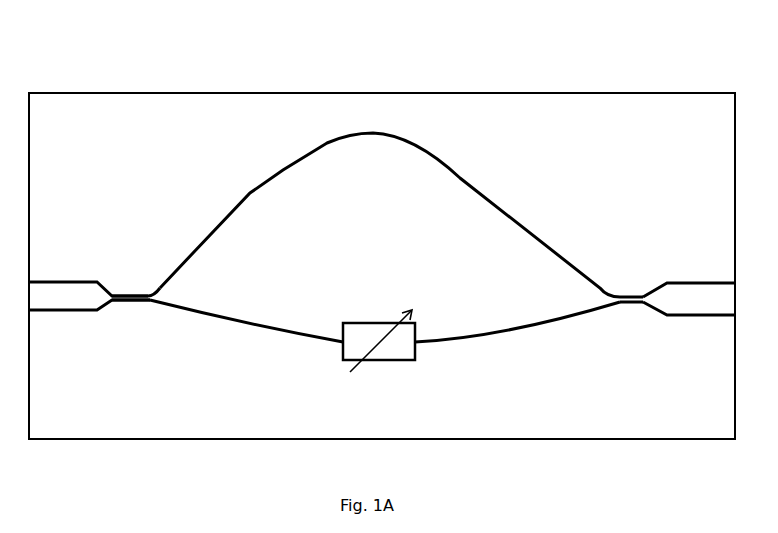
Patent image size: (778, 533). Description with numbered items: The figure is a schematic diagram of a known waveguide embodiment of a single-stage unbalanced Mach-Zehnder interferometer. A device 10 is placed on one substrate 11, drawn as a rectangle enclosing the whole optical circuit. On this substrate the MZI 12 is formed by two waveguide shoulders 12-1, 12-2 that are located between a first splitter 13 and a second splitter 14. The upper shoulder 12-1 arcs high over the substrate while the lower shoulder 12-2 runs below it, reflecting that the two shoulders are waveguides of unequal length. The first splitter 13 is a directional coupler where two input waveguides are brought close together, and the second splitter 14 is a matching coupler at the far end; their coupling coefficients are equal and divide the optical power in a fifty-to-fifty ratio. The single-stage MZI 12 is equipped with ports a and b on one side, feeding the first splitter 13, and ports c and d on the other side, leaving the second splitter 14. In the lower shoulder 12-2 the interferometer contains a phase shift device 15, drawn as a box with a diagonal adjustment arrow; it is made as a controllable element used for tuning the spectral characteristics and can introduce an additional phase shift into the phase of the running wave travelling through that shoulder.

The device 10 is at (120, 72).
The substrate 11 is at (677, 134).
The MZI 12 is at (244, 191).
The first shoulder 12-1 is at (194, 252).
The second shoulder 12-2 is at (285, 333).
The first splitter 13 is at (128, 292).
The second splitter 14 is at (638, 298).
The phase shift device 15 is at (387, 362).
The port a is at (56, 280).
The port b is at (56, 313).
The port c is at (720, 282).
The port d is at (723, 318).